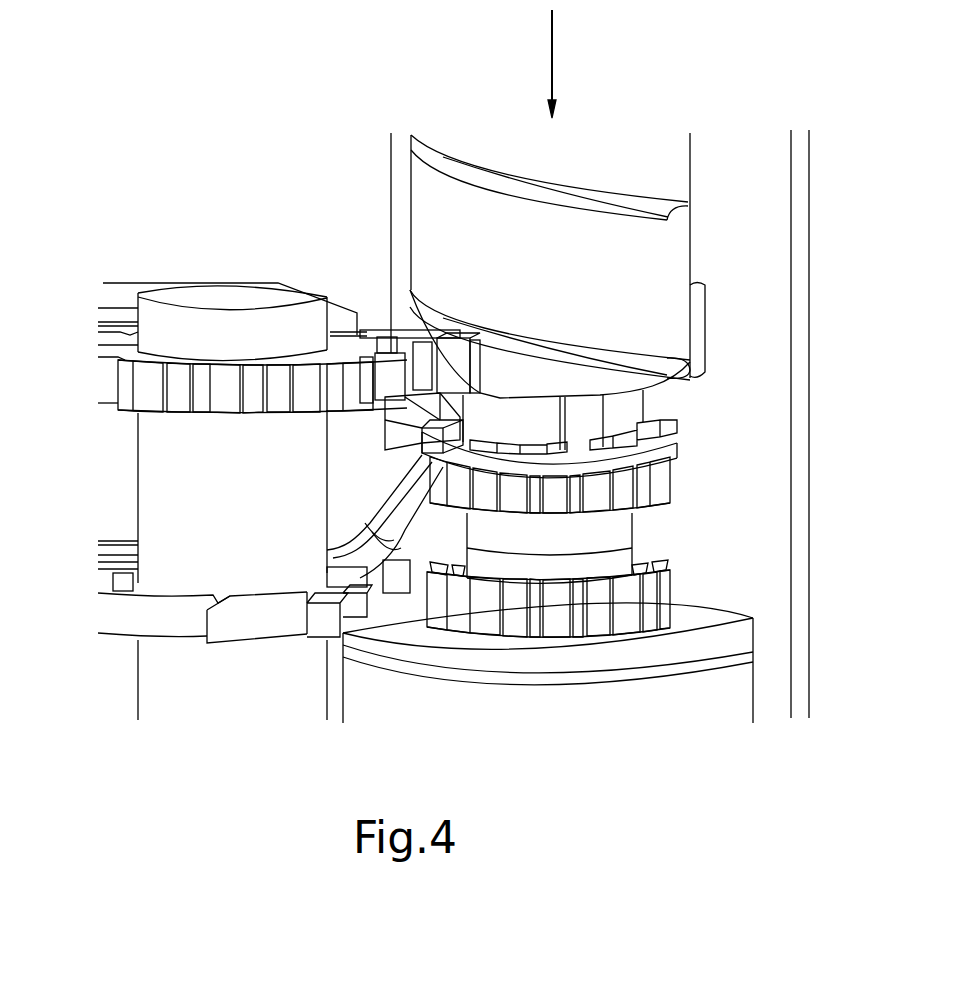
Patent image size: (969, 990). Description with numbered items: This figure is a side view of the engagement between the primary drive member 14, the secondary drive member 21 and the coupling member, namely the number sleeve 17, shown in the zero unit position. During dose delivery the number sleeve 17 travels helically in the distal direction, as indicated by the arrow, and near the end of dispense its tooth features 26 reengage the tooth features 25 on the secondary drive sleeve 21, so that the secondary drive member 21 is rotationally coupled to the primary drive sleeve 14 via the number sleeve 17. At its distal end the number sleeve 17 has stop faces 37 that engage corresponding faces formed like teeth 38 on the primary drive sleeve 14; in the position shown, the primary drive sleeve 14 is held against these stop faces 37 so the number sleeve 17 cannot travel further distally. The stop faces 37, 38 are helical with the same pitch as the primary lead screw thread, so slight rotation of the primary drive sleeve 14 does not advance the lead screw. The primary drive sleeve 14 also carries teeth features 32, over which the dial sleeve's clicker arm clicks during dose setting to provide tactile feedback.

The primary drive member 14 is at (677, 635).
The dose dial component 17 is at (640, 158).
The secondary drive member 21 is at (204, 297).
The tooth features 25 is at (388, 372).
The tooth features 26 is at (392, 330).
The teeth features 32 is at (650, 485).
The stop faces 37 is at (632, 417).
The teeth 38 is at (682, 433).